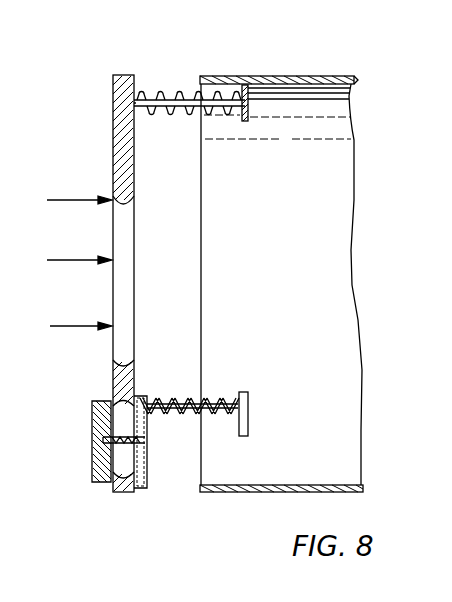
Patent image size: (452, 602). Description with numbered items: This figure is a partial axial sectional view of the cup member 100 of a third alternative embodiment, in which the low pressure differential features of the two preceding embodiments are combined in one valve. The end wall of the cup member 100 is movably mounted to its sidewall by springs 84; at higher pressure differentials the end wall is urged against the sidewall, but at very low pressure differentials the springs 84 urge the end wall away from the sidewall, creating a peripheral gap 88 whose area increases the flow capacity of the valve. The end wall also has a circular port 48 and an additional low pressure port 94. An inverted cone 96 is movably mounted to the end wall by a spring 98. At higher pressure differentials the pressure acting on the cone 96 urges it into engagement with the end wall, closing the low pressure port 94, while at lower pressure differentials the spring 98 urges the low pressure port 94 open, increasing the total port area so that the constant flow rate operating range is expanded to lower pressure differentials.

The circular port 48 is at (125, 203).
The springs 84 is at (182, 108).
The peripheral gap 88 is at (164, 84).
The low pressure port 94 is at (120, 410).
The inverted cone 96 is at (92, 462).
The spring 98 is at (150, 450).
The cup member 100 is at (266, 75).